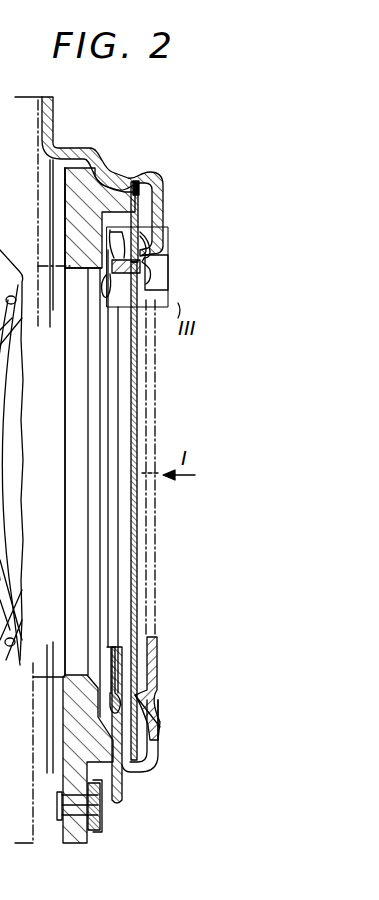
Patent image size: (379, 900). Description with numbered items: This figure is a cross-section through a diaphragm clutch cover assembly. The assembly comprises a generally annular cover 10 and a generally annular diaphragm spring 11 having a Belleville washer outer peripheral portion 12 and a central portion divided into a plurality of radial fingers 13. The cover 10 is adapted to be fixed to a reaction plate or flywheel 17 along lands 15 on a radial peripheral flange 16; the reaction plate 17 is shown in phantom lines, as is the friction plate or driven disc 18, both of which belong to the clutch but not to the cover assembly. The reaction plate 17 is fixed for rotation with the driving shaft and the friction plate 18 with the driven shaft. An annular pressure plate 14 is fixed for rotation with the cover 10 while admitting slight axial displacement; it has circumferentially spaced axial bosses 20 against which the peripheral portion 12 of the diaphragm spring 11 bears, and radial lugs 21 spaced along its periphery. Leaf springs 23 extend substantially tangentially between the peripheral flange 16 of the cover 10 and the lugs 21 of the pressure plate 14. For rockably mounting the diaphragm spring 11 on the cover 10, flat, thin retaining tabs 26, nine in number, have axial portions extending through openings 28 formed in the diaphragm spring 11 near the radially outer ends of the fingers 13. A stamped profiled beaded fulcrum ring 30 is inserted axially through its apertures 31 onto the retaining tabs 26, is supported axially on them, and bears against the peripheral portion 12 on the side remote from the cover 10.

The cover 10 is at (167, 161).
The diaphragm spring 11 is at (143, 188).
The Belleville washer outer peripheral portion 12 is at (139, 210).
The radial fingers 13 is at (135, 417).
The pressure plate 14 is at (95, 177).
The lands 15 is at (57, 113).
The radial peripheral flange 16 is at (55, 101).
The reaction plate 17 is at (42, 96).
The friction plate 18 is at (36, 190).
The axial bosses 20 is at (113, 188).
The radial lugs 21 is at (72, 830).
The leaf springs 23 is at (86, 835).
The retaining tabs 26 is at (146, 284).
The openings 28 is at (152, 250).
The fulcrum ring 30 is at (146, 194).
The apertures 31 is at (117, 278).